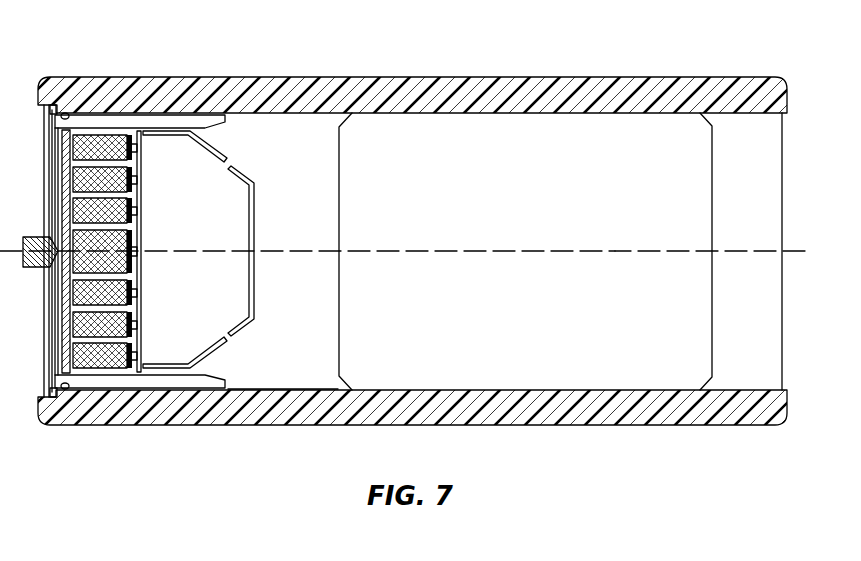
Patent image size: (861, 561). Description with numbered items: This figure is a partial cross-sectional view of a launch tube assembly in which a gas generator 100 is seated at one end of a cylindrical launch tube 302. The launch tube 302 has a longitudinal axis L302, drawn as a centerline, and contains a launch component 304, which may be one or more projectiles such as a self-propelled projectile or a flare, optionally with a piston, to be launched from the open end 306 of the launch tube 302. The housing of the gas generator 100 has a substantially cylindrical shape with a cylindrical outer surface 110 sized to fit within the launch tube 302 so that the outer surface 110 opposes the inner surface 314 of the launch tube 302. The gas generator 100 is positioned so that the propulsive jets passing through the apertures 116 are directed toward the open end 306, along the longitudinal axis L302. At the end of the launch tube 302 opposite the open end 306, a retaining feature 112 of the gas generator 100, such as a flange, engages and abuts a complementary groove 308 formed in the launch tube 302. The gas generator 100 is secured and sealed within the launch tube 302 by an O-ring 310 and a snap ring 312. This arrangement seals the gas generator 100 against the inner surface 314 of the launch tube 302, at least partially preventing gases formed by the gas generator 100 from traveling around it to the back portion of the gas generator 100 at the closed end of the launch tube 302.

The gas generator 100 is at (119, 113).
The cylindrical outer surface 110 is at (177, 113).
The retaining feature 112 is at (67, 390).
The apertures 116 is at (232, 160).
The launch tube 302 is at (357, 95).
The launch component 304 is at (607, 158).
The open end 306 is at (771, 151).
The groove 308 is at (63, 113).
The O-ring 310 is at (80, 392).
The snap ring 312 is at (47, 427).
The inner surface 314 is at (297, 376).
The longitudinal axis L302 is at (615, 252).